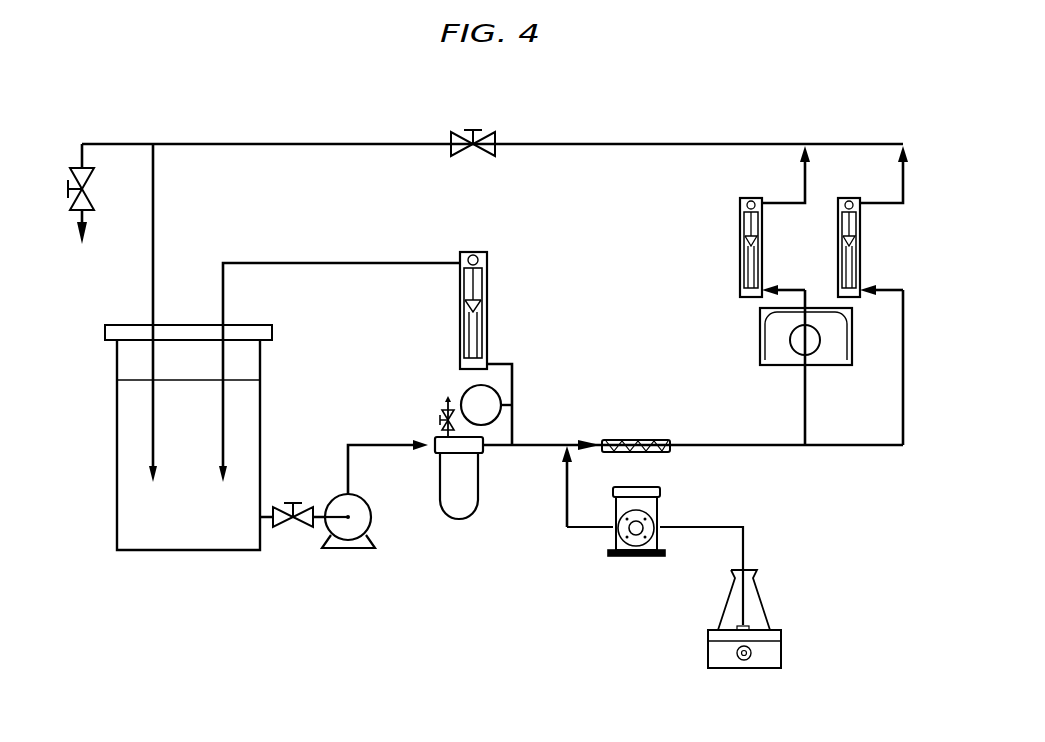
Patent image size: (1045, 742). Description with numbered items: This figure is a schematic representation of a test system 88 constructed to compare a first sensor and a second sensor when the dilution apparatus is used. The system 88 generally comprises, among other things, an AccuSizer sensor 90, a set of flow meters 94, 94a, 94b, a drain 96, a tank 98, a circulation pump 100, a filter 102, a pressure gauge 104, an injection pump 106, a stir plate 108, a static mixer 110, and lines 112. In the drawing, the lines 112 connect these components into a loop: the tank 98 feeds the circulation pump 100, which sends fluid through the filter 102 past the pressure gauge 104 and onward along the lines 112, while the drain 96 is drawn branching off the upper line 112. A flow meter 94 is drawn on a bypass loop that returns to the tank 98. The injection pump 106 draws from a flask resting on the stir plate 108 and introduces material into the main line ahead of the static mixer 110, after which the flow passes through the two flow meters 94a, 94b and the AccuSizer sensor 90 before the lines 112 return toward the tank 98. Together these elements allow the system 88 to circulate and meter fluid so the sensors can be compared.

The system 88 is at (598, 86).
The AccuSizer sensor 90 is at (760, 343).
The flow meter 94 is at (489, 313).
The flow meter 94a is at (740, 248).
The flow meter 94b is at (838, 248).
The drain 96 is at (92, 195).
The tank 98 is at (116, 455).
The circulation pump 100 is at (372, 531).
The filter 102 is at (482, 512).
The pressure gauge 104 is at (466, 392).
The injection pump 106 is at (611, 540).
The stir plate 108 is at (708, 655).
The static mixer 110 is at (672, 452).
The lines 112 is at (291, 142).